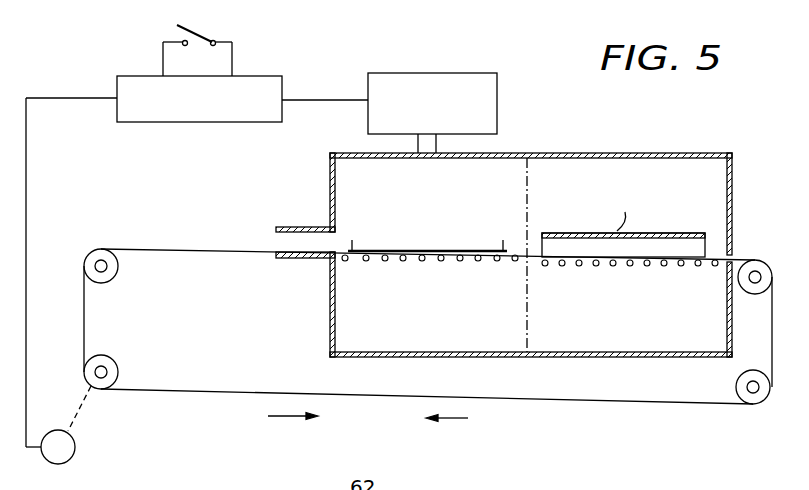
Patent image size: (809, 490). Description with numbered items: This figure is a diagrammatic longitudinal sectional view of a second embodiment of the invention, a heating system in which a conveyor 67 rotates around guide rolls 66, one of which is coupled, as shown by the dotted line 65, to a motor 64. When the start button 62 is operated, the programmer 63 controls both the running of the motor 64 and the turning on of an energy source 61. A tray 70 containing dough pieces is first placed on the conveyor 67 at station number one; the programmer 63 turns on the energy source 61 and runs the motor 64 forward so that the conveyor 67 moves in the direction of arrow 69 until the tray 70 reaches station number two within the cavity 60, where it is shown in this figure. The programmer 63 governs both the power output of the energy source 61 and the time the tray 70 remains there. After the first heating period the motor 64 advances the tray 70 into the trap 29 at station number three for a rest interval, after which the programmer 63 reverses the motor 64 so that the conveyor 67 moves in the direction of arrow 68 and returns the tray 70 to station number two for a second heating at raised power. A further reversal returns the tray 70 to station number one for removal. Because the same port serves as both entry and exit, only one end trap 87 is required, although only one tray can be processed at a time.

The trap 29 is at (680, 233).
The cavity 60 is at (640, 126).
The energy source 61 is at (497, 85).
The start button 62 is at (191, 35).
The programmer 63 is at (260, 77).
The motor 64 is at (75, 453).
The dotted line 65 is at (83, 404).
The guide rolls 66 is at (118, 373).
The conveyor 67 is at (213, 249).
The arrow 68 is at (266, 415).
The arrow 69 is at (468, 418).
The tray 70 is at (423, 250).
The end trap 87 is at (287, 228).